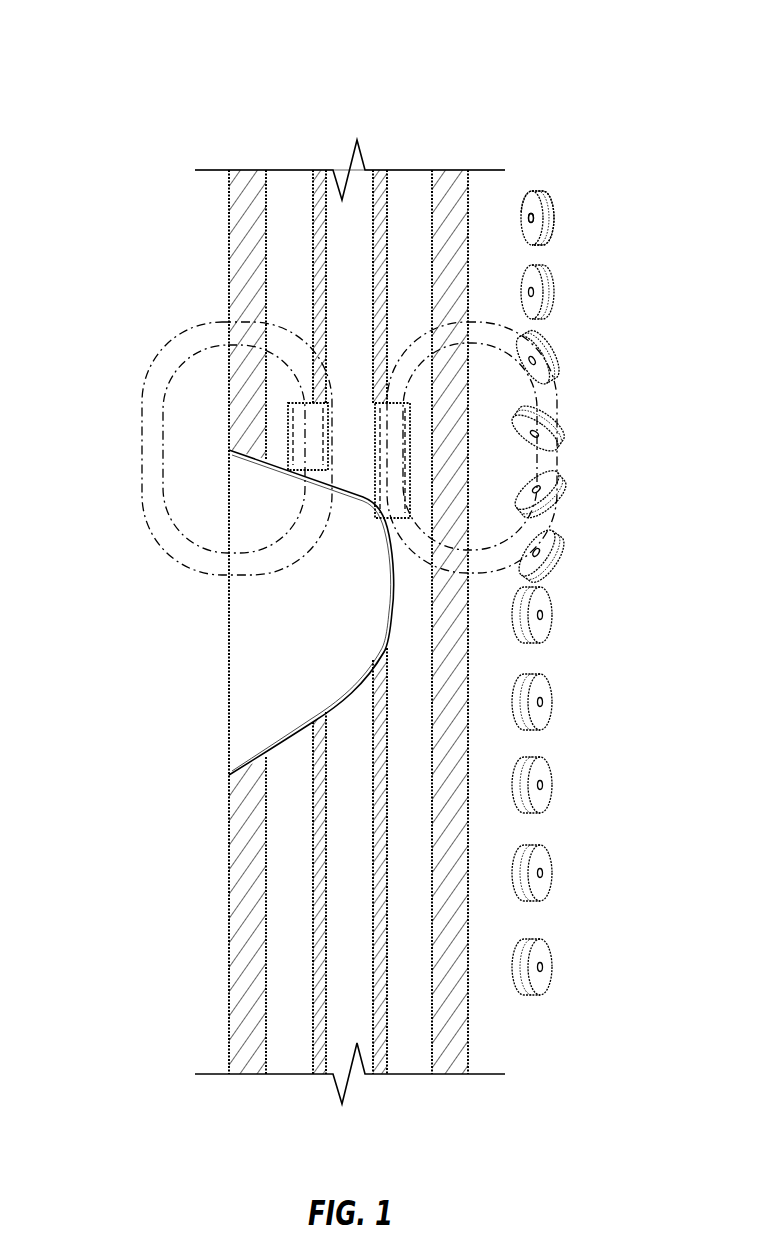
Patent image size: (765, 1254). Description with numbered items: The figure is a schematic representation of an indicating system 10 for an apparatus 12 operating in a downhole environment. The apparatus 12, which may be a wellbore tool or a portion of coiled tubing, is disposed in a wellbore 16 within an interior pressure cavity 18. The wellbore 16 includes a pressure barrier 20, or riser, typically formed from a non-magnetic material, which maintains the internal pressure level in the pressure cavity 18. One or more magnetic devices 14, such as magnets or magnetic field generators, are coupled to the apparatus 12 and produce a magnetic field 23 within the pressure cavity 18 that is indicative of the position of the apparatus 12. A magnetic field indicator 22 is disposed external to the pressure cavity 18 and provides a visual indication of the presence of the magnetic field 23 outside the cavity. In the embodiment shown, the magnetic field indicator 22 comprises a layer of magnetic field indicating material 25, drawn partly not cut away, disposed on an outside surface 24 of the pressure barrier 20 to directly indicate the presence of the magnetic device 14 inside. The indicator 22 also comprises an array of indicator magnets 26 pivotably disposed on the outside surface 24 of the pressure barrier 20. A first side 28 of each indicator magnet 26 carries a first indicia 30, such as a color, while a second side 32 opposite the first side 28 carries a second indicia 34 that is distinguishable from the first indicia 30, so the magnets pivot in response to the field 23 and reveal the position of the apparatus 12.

The indicating system 10 is at (126, 50).
The apparatus 12 is at (388, 199).
The magnetic device 14 is at (288, 434).
The wellbore 16 is at (230, 960).
The pressure cavity 18 is at (291, 190).
The pressure barrier 20 is at (242, 271).
The magnetic field indicator 22 is at (575, 599).
The magnetic field 23 is at (143, 507).
The outside surface 24 is at (470, 862).
The magnetic field indicating material 25 is at (248, 688).
The indicator magnets 26 is at (567, 296).
The first side 28 is at (561, 226).
The first indicia 30 is at (553, 205).
The second side 32 is at (514, 206).
The second indicia 34 is at (527, 200).